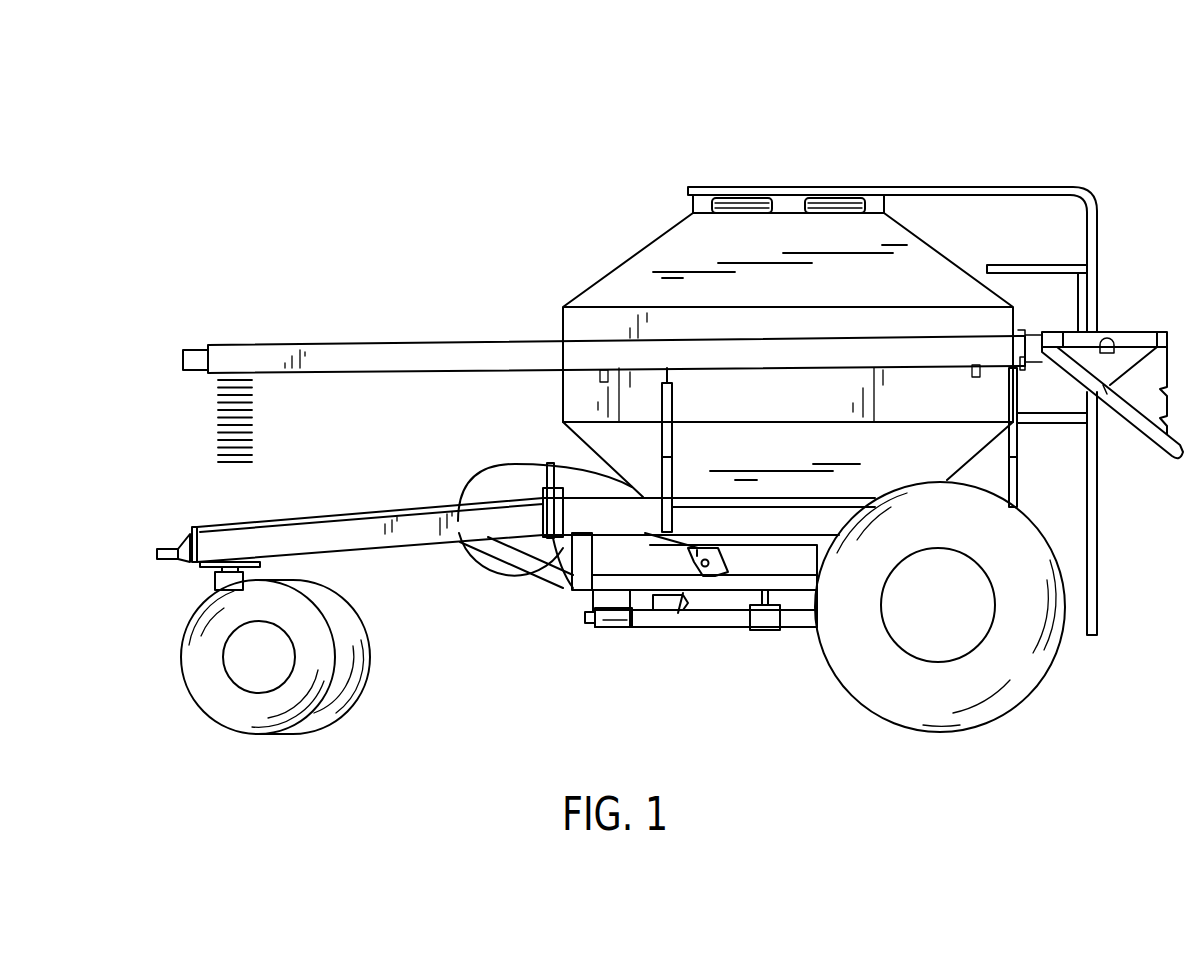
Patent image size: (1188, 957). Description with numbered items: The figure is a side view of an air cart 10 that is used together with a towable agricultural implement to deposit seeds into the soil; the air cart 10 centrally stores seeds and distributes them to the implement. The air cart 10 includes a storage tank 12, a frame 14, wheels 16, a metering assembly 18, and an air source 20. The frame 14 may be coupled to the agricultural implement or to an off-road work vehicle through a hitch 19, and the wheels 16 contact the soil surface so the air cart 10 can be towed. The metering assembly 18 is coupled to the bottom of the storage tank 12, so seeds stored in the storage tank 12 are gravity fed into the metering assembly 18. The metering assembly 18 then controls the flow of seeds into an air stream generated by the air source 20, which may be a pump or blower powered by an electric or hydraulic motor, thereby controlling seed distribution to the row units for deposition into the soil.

The air cart 10 is at (629, 146).
The storage tank 12 is at (668, 246).
The frame 14 is at (367, 511).
The wheels 16 is at (203, 712).
The metering assembly 18 is at (722, 560).
The hitch 19 is at (168, 548).
The air source 20 is at (476, 487).